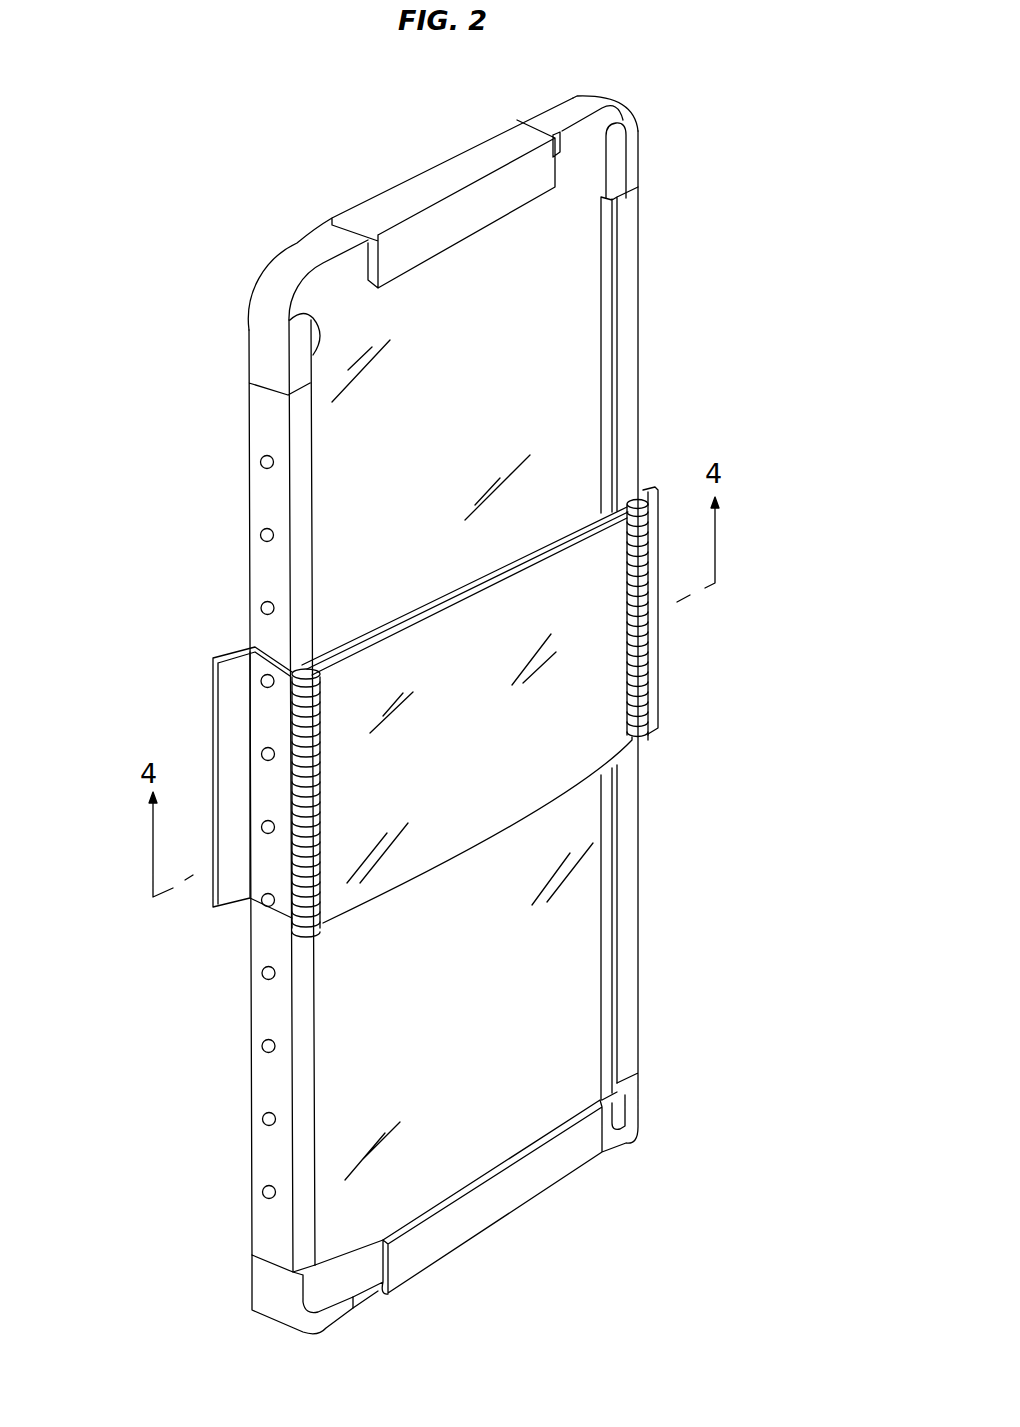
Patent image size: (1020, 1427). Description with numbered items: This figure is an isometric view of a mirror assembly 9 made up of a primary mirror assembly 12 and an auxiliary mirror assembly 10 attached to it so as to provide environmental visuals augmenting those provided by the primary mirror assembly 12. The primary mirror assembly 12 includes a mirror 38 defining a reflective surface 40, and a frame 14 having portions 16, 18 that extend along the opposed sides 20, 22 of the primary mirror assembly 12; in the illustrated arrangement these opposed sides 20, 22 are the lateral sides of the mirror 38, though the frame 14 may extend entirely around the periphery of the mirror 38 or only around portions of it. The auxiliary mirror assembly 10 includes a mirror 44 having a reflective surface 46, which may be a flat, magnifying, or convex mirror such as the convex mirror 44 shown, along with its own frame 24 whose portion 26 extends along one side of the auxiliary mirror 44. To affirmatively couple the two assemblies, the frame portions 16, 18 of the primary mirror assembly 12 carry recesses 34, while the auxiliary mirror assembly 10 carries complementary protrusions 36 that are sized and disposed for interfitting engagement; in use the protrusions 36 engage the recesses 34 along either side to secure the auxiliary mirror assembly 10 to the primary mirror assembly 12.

The mirror assembly 9 is at (673, 223).
The auxiliary mirror assembly 10 is at (656, 474).
The primary mirror assembly 12 is at (640, 114).
The frame 14 is at (250, 397).
The frame portion 16 is at (265, 1085).
The frame portion 18 is at (627, 987).
The opposed side 20 is at (312, 320).
The opposed side 22 is at (603, 918).
The frame 24 is at (358, 632).
The frame portion 26 is at (261, 757).
The recesses 34 is at (262, 458).
The protrusions 36 is at (261, 685).
The mirror 38 is at (578, 298).
The reflective surface 40 is at (474, 1035).
The mirror 44 is at (632, 651).
The reflective surface 46 is at (494, 763).